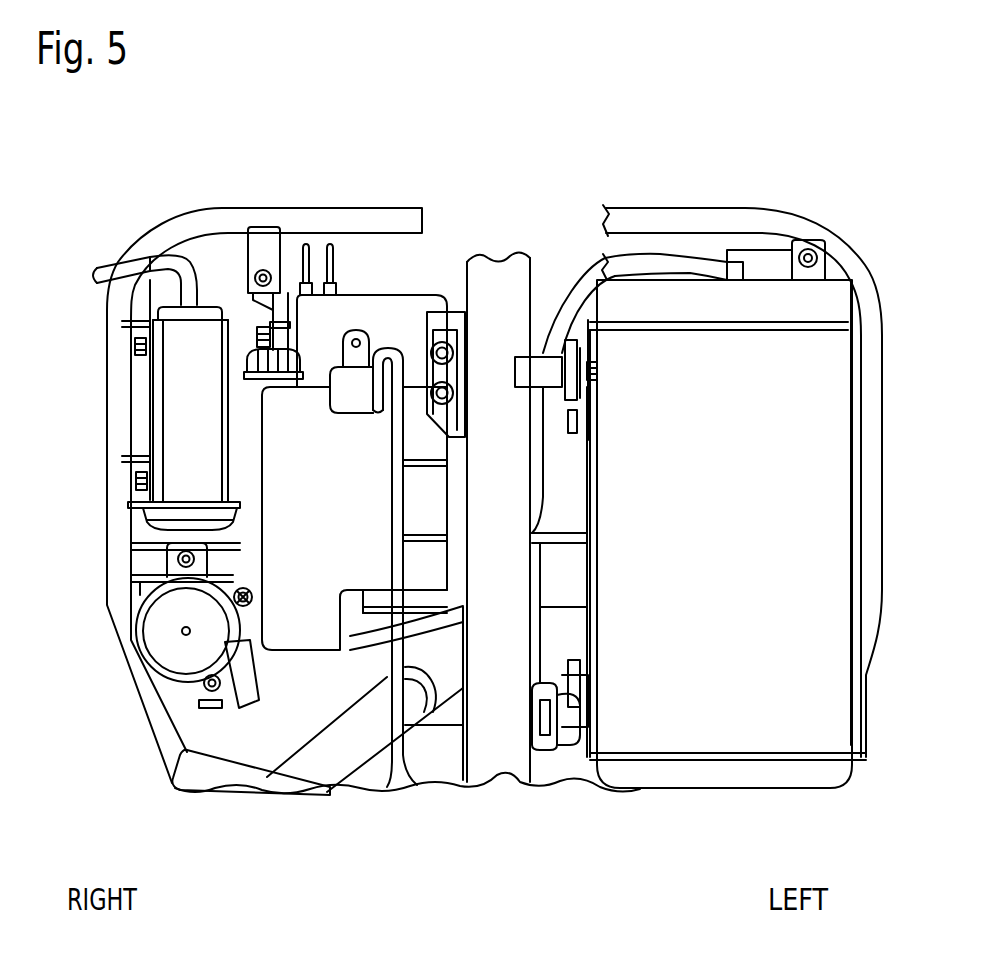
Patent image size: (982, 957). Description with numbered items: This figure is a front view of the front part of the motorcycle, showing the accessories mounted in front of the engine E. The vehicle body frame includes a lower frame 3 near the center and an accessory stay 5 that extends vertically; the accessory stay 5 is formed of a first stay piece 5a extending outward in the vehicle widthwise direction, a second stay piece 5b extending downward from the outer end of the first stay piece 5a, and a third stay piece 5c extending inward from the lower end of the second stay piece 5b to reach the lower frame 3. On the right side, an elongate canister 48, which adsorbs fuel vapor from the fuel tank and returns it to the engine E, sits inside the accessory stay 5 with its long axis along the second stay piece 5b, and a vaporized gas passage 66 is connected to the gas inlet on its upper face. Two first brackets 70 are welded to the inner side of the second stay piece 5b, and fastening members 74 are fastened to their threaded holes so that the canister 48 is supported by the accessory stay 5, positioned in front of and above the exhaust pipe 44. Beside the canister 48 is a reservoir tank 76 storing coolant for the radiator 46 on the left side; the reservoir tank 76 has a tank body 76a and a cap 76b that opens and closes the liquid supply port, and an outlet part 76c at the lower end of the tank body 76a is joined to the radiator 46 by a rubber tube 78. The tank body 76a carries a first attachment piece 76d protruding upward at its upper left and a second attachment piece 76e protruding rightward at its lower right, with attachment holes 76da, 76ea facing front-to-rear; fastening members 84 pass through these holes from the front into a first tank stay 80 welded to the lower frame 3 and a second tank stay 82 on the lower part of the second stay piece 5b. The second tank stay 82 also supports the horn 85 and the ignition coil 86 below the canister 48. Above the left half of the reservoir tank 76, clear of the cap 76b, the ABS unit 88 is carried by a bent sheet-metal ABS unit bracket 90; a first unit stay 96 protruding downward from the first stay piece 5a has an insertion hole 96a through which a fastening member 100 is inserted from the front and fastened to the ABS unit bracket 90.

The lower frame 3 is at (498, 760).
The accessory stay 5 is at (404, 205).
The first stay piece 5a is at (346, 210).
The second stay piece 5b is at (105, 387).
The third stay piece 5c is at (172, 787).
The exhaust pipe 44 is at (357, 755).
The radiator 46 is at (735, 730).
The canister 48 is at (173, 418).
The vaporized gas passage 66 is at (167, 263).
The first bracket 70 is at (140, 318).
The fastening member 74 is at (136, 347).
The reservoir tank 76 is at (394, 521).
The tank body 76a is at (298, 622).
The cap 76b is at (250, 355).
The outlet part 76c is at (347, 648).
The first attachment piece 76d is at (452, 435).
The attachment hole 76da is at (465, 420).
The second attachment piece 76e is at (262, 652).
The attachment hole 76ea is at (197, 684).
The rubber tube 78 is at (672, 266).
The first tank stay 80 is at (448, 327).
The second tank stay 82 is at (152, 586).
The fastening member 84 is at (240, 583).
The horn 85 is at (160, 647).
The ignition coil 86 is at (240, 695).
The ABS unit 88 is at (367, 305).
The ABS unit bracket 90 is at (291, 300).
The first unit stay 96 is at (258, 227).
The insertion hole 96a is at (289, 248).
The fastening member 100 is at (247, 330).
The engine E is at (567, 637).